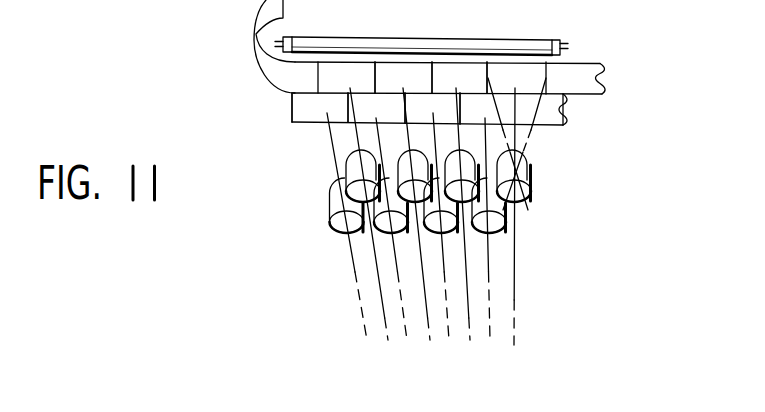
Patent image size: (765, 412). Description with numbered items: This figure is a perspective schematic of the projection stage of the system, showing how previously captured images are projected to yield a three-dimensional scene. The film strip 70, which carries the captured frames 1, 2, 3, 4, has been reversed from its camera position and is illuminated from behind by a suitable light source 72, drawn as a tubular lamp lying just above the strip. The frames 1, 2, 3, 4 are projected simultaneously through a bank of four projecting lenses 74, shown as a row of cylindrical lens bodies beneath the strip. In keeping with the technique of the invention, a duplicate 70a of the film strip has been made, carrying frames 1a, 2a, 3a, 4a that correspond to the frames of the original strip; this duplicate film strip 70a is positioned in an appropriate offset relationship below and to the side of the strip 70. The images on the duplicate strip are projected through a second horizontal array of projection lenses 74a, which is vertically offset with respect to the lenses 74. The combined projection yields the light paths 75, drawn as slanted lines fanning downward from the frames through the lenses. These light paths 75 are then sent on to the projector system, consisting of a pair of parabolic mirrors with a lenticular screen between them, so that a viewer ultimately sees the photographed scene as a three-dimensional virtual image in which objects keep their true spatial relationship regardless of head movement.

The film strip 70 is at (606, 78).
The duplicate film strip 70a is at (565, 117).
The light source 72 is at (427, 38).
The projecting lenses 74 is at (532, 178).
The projection lenses 74a is at (328, 210).
The light paths 75 is at (516, 287).
The frame 1 is at (346, 77).
The frame 2 is at (403, 77).
The frame 3 is at (459, 77).
The frame 4 is at (516, 78).
The frame 1a is at (320, 107).
The frame 2a is at (376, 108).
The frame 3a is at (432, 108).
The frame 4a is at (511, 109).